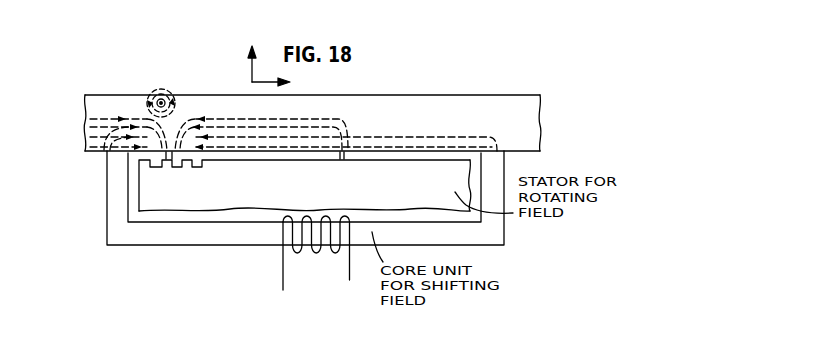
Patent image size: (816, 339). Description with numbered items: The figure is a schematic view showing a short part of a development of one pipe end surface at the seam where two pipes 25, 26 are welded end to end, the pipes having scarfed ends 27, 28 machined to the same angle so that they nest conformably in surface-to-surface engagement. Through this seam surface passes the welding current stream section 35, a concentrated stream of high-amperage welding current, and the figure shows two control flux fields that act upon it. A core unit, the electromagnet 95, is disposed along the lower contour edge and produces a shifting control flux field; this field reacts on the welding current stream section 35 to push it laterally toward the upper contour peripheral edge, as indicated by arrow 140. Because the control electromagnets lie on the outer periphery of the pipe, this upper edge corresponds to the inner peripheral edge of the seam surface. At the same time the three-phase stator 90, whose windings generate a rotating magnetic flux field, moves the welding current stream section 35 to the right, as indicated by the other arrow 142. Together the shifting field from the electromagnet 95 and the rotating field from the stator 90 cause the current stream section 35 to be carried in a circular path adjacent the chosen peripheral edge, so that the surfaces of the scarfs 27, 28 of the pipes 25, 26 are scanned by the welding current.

The pipe 25 is at (121, 105).
The pipe 26 is at (93, 80).
The scarfed end 27 is at (87, 142).
The scarfed end 28 is at (62, 186).
The welding current stream section 35 is at (162, 98).
The three-phase stator 90 is at (312, 197).
The electromagnet 95 is at (228, 237).
The arrow 140 is at (252, 75).
The arrow 142 is at (278, 75).